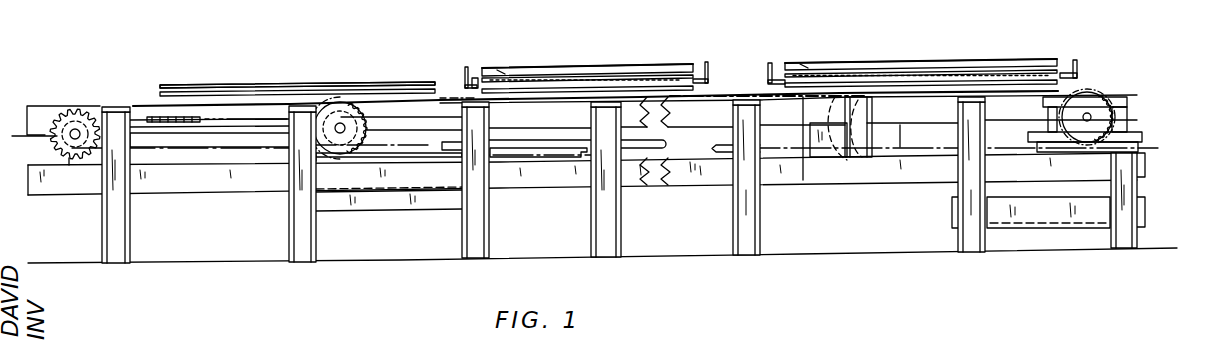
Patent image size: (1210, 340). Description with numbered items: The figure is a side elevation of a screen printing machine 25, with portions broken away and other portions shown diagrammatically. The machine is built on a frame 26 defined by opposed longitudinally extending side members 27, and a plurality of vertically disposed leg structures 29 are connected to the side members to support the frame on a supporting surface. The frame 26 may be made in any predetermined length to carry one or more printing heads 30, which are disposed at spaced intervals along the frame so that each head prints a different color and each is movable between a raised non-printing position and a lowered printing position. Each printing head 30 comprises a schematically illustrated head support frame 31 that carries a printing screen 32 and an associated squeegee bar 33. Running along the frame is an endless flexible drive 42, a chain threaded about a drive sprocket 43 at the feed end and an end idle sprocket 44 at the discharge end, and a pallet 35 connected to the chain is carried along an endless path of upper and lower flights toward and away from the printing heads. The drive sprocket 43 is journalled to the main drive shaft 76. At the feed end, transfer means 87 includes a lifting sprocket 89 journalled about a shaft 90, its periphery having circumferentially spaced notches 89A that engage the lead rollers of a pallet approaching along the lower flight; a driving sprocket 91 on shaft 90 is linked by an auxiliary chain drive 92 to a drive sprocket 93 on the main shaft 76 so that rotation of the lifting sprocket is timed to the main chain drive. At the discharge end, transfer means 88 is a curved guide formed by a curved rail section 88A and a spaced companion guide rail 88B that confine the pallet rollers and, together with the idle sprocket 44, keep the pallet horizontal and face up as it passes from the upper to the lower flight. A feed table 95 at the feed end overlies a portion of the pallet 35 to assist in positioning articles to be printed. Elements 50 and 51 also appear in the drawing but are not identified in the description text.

The screen printing machine 25 is at (1092, 78).
The frame 26 is at (1137, 163).
The longitudinally extending side members 27 is at (193, 173).
The leg structures 29 is at (303, 250).
The printing heads 30 is at (588, 53).
The head support frame 31 is at (705, 63).
The printing screen 32 is at (632, 77).
The squeegee bar 33 is at (512, 68).
The pallet 35 is at (232, 92).
The endless flexible drive 42 is at (900, 147).
The drive sprocket 43 is at (352, 113).
The end idle sprocket 44 is at (1105, 110).
The slide bar 50 is at (573, 157).
The stop bracket 51 is at (321, 167).
The main drive shaft 76 is at (340, 128).
The transfer means 87 is at (40, 112).
The transfer means 88 is at (835, 163).
The curved rail section 88A is at (835, 97).
The companion guide rail 88B is at (862, 157).
The lifting sprocket 89 is at (68, 118).
The notches 89A is at (69, 158).
The shaft 90 is at (78, 128).
The driving sprocket 91 is at (28, 133).
The auxiliary chain drive 92 is at (170, 118).
The drive sprocket 93 is at (350, 130).
The feed table 95 is at (278, 85).